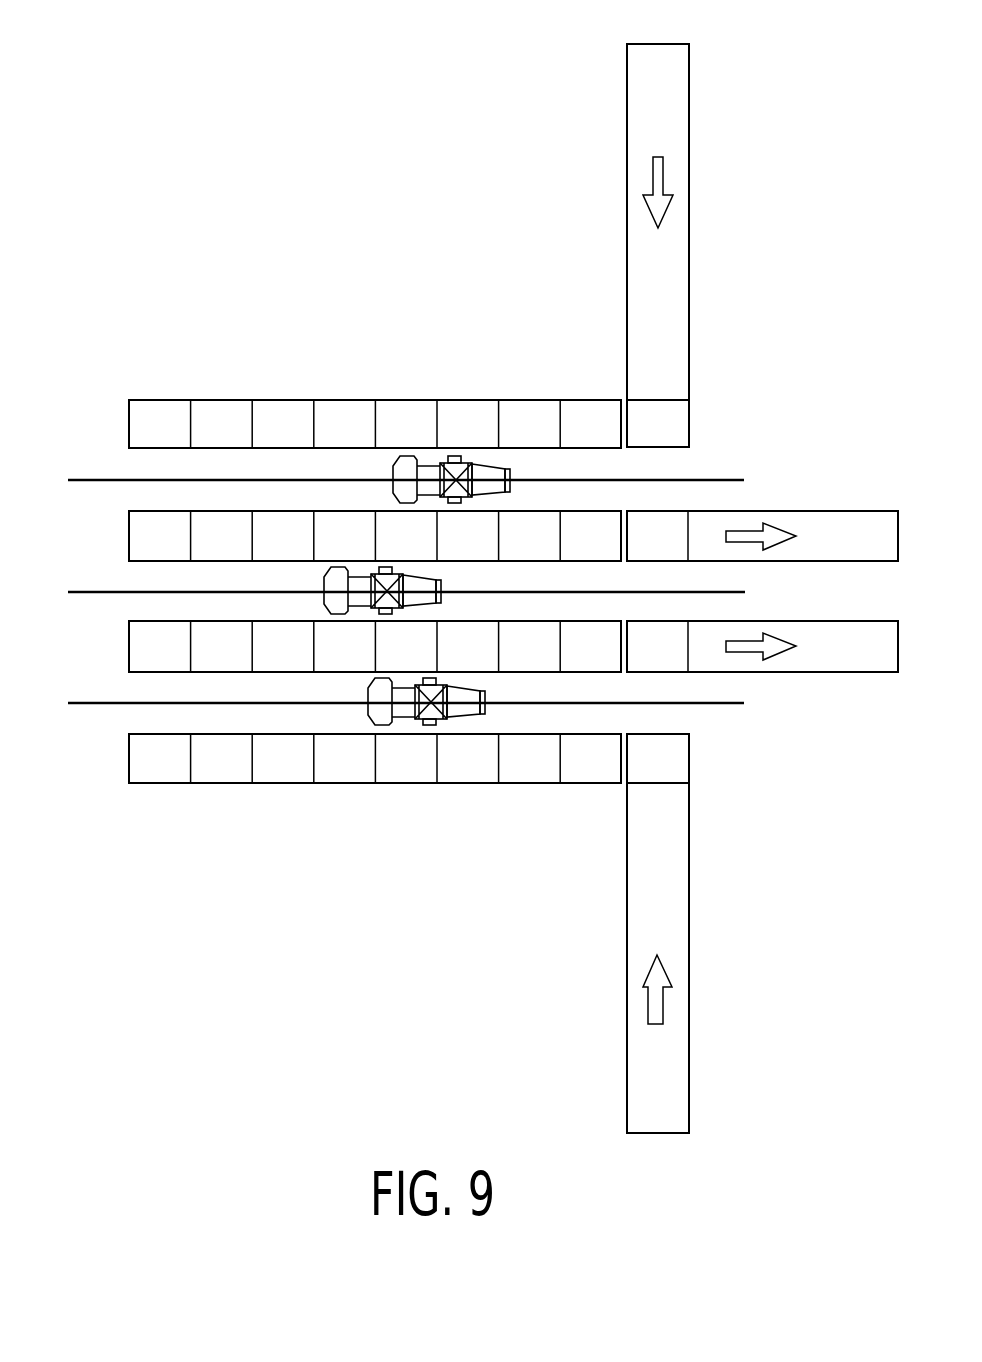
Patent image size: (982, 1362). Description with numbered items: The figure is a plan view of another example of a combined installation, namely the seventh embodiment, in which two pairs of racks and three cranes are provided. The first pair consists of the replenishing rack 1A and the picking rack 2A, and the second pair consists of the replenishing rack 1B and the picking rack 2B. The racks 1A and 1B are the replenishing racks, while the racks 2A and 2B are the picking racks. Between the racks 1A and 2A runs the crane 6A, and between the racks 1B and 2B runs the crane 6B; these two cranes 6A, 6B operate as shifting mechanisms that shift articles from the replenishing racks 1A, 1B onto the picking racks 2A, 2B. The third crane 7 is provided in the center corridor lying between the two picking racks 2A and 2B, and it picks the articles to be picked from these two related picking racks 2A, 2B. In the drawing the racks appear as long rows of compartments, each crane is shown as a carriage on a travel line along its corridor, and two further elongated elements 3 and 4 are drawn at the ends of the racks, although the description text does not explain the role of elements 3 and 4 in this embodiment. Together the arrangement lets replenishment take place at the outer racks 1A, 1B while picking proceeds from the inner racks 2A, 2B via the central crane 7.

The replenishing rack 1A is at (138, 429).
The replenishing rack 1B is at (138, 760).
The picking rack 2A is at (138, 542).
The picking rack 2B is at (138, 648).
The inlet conveyor 3 is at (677, 858).
The outlet conveyor 4 is at (680, 318).
The crane 6A is at (500, 483).
The crane 6B is at (476, 708).
The crane 7 is at (432, 596).